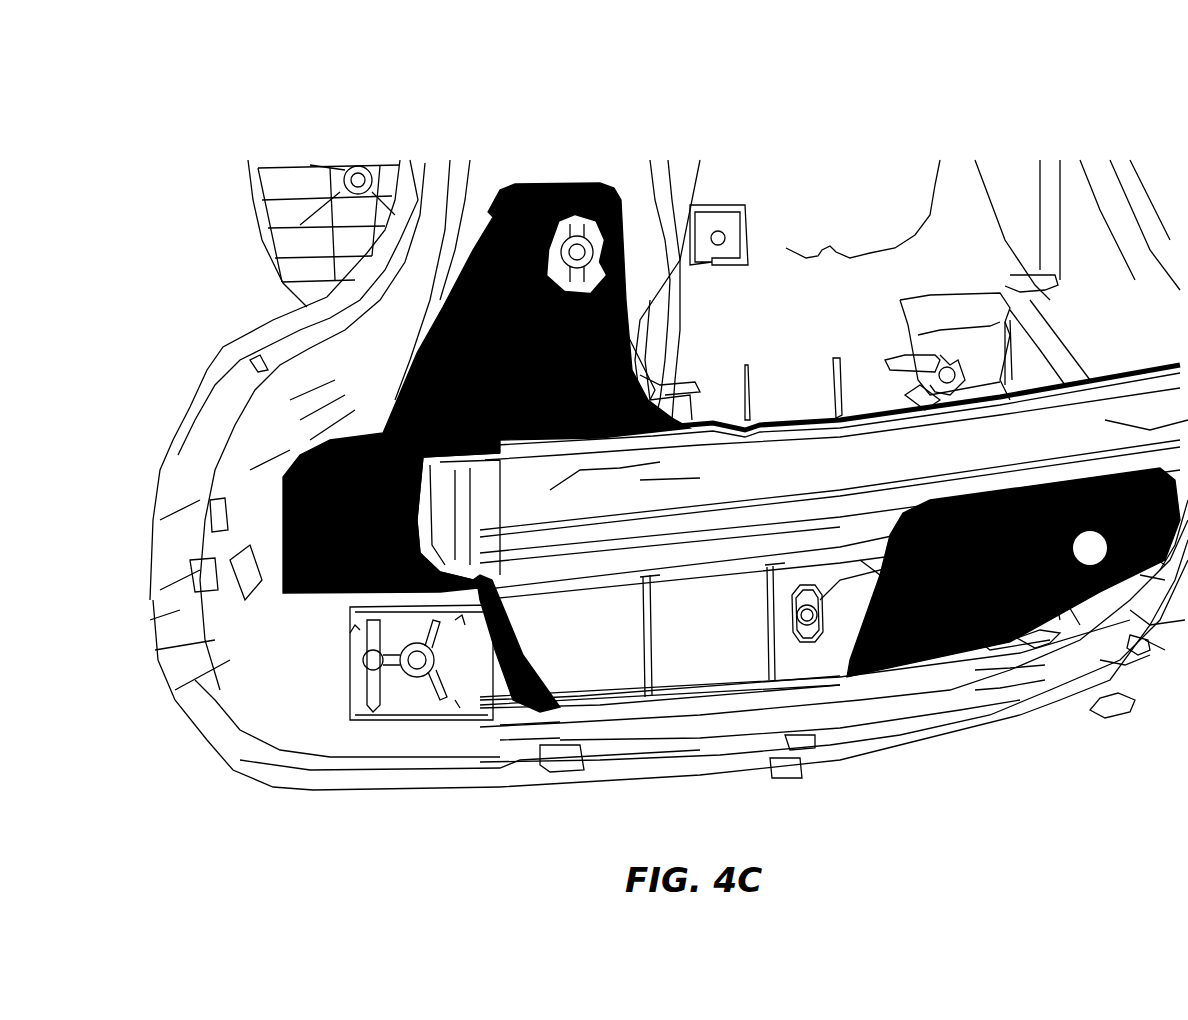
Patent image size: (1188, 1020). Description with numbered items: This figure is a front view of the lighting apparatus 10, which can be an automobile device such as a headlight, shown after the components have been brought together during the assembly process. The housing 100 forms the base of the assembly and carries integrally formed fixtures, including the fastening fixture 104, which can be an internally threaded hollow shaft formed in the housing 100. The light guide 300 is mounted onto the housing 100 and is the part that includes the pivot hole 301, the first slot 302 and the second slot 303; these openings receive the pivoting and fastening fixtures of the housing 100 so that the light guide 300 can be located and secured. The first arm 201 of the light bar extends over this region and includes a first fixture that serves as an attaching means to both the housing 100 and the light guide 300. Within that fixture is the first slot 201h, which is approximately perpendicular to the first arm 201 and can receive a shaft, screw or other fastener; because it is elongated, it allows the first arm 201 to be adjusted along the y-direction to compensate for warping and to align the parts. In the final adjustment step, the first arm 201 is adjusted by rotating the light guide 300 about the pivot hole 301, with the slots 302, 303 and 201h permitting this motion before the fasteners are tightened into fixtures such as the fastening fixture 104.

The lighting apparatus 10 is at (215, 114).
The housing 100 is at (968, 178).
The first arm 201 is at (838, 438).
The light guide 300 is at (612, 174).
The second slot 303 is at (573, 280).
The pivot hole 301 is at (1092, 552).
The first slot 302 is at (825, 652).
The first slot 201h is at (857, 726).
The fastening fixture 104 is at (427, 690).